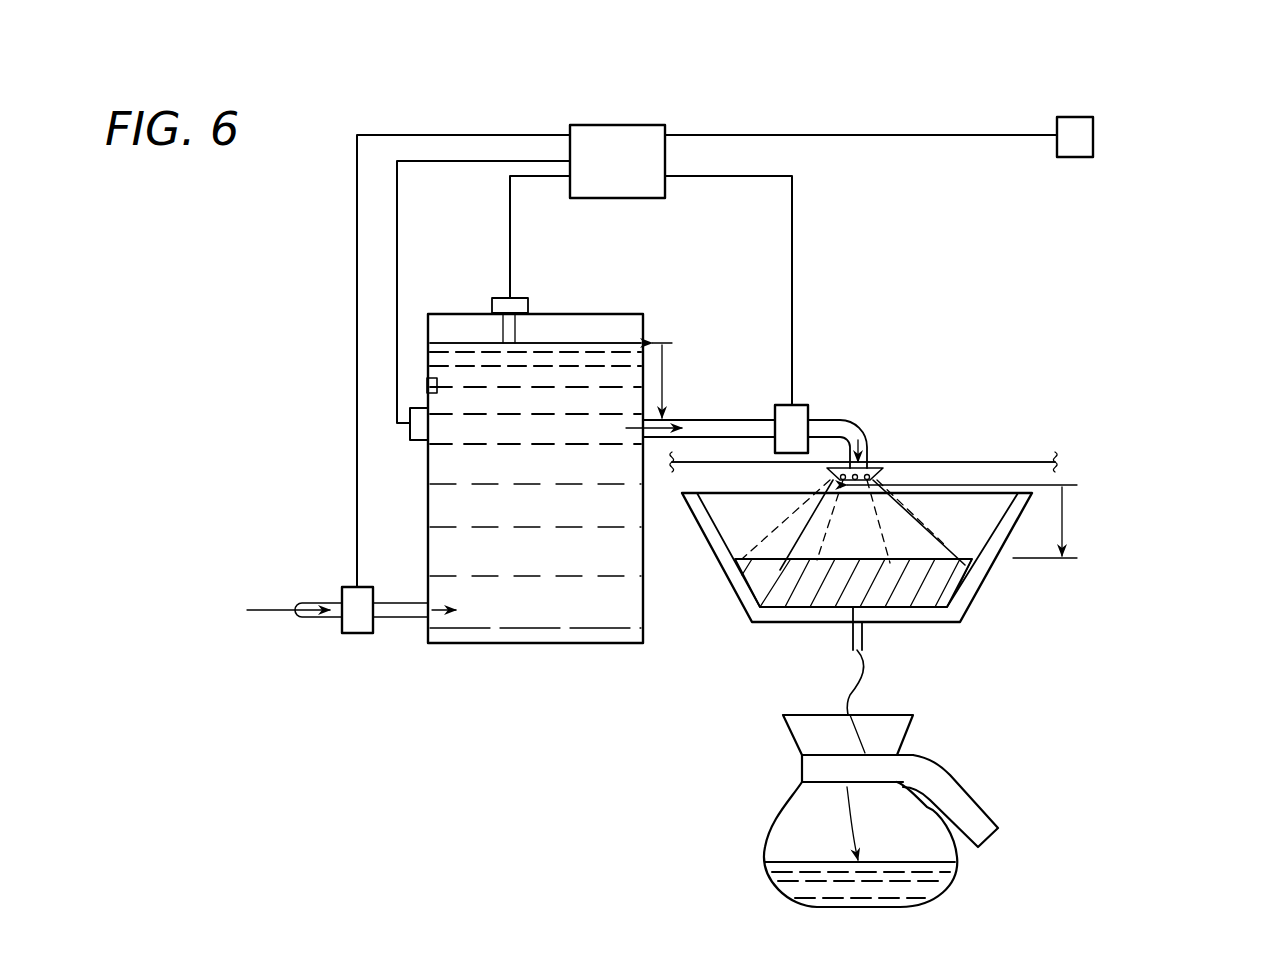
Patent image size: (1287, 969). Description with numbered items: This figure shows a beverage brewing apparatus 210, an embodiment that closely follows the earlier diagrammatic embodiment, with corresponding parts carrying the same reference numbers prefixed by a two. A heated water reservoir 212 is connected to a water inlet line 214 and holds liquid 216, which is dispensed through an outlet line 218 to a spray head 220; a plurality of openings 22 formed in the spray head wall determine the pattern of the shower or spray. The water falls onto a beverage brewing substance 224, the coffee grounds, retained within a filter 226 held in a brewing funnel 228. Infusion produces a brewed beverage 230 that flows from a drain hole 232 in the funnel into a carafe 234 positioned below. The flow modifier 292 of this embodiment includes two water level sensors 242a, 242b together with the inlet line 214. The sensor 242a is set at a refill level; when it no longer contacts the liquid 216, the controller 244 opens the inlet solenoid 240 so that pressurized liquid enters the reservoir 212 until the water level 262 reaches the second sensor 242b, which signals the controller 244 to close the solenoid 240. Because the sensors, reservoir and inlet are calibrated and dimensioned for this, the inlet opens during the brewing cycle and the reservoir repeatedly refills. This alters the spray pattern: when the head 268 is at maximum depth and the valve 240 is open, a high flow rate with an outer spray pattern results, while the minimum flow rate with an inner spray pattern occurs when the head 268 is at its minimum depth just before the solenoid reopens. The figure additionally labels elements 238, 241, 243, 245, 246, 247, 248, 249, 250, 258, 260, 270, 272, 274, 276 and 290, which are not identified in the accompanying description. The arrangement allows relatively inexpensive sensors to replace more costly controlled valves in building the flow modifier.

The beverage brewing apparatus 210 is at (1145, 237).
The heated water reservoir 212 is at (565, 645).
The water inlet line 214 is at (315, 623).
The liquid 216 is at (513, 602).
The outlet line 218 is at (825, 415).
The openings 22 is at (855, 483).
The spray head 220 is at (820, 477).
The beverage brewing substance 224 is at (803, 592).
The filter 226 is at (748, 588).
The brewing funnel 228 is at (745, 613).
The brewed beverage 230 is at (847, 700).
The drain hole 232 is at (867, 633).
The carafe 234 is at (768, 835).
The tank top 238 is at (620, 323).
The inlet solenoid 240 is at (357, 636).
The valve control line 241 is at (354, 460).
The water level sensor 242a is at (427, 386).
The water level sensor 242b is at (513, 296).
The sensor line 243 is at (508, 220).
The controller 244 is at (617, 123).
The heater 245 is at (421, 442).
The user interface 246 is at (1093, 137).
The interface line 247 is at (1003, 137).
The dispense valve 248 is at (787, 403).
The heater control line 249 is at (399, 262).
The valve control line 250 is at (795, 220).
The spray head plane 258 is at (997, 463).
The brew basket top plane 260 is at (923, 473).
The water level 262 is at (548, 340).
The head 268 is at (665, 375).
The grounds bed depth 270 is at (1015, 558).
The flow path 272 is at (960, 550).
The flow path 274 is at (883, 542).
The flow path 276 is at (940, 528).
The brewing region 290 is at (1155, 578).
The flow modifier 292 is at (1032, 382).